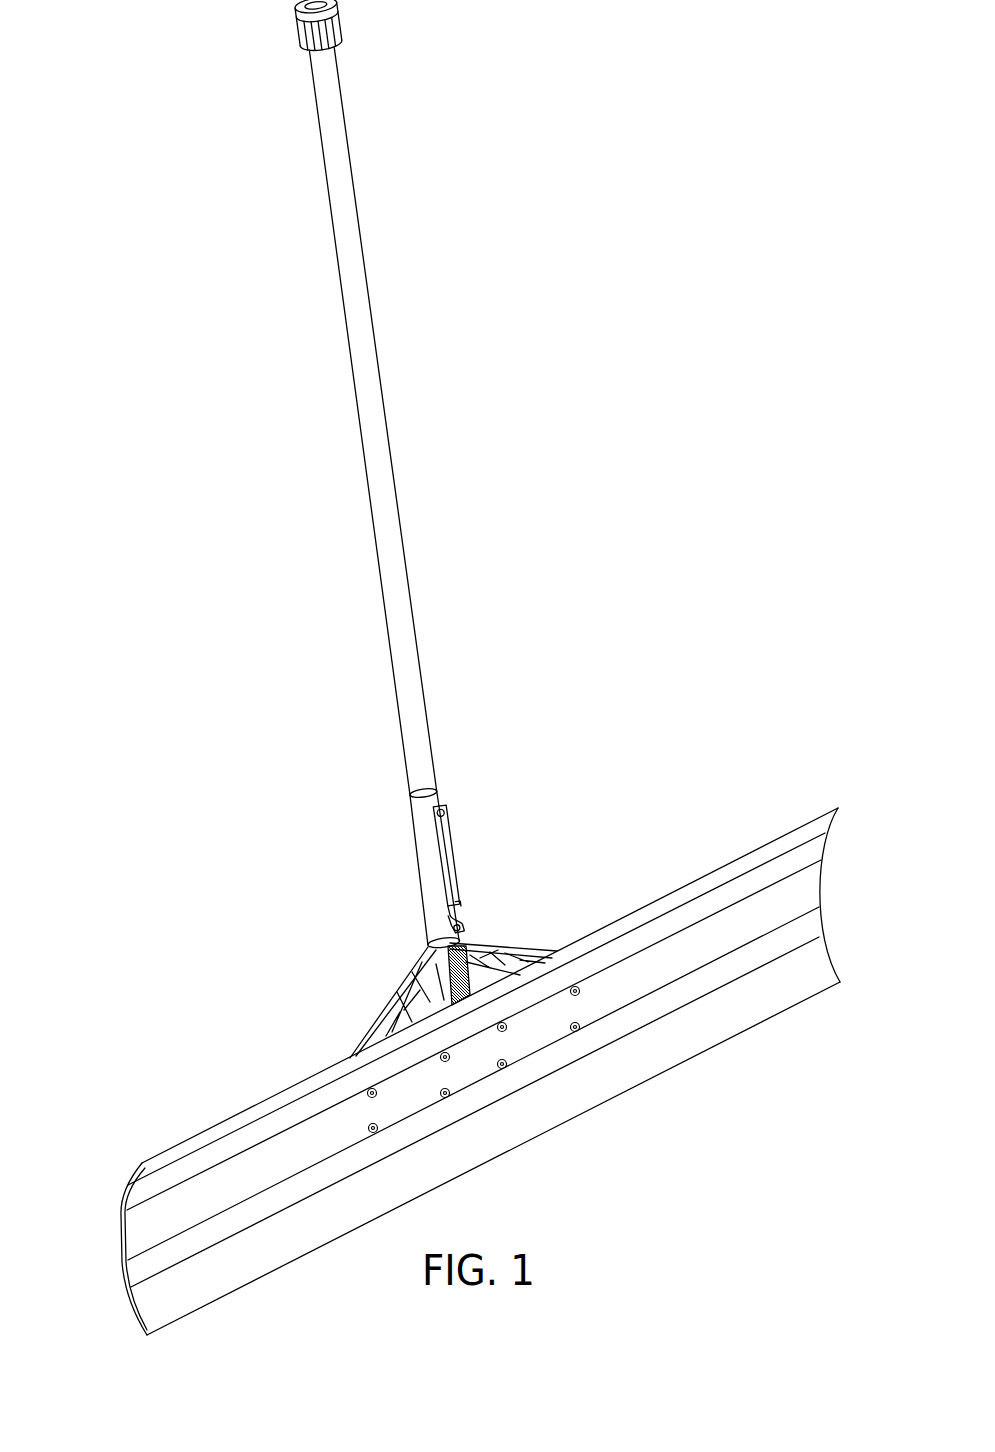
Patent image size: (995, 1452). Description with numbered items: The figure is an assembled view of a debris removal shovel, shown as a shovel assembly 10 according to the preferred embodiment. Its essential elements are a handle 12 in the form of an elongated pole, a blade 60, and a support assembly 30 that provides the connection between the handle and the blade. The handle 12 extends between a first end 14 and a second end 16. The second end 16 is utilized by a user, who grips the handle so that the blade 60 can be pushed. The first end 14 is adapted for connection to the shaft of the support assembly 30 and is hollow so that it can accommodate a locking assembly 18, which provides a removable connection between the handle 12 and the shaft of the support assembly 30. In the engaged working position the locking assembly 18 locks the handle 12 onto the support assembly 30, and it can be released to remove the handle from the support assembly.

The shovel assembly 10 is at (597, 825).
The handle 12 is at (371, 305).
The first end 14 is at (418, 841).
The second end 16 is at (335, 87).
The locking assembly 18 is at (449, 852).
The support assembly 30 is at (508, 946).
The blade 60 is at (820, 885).